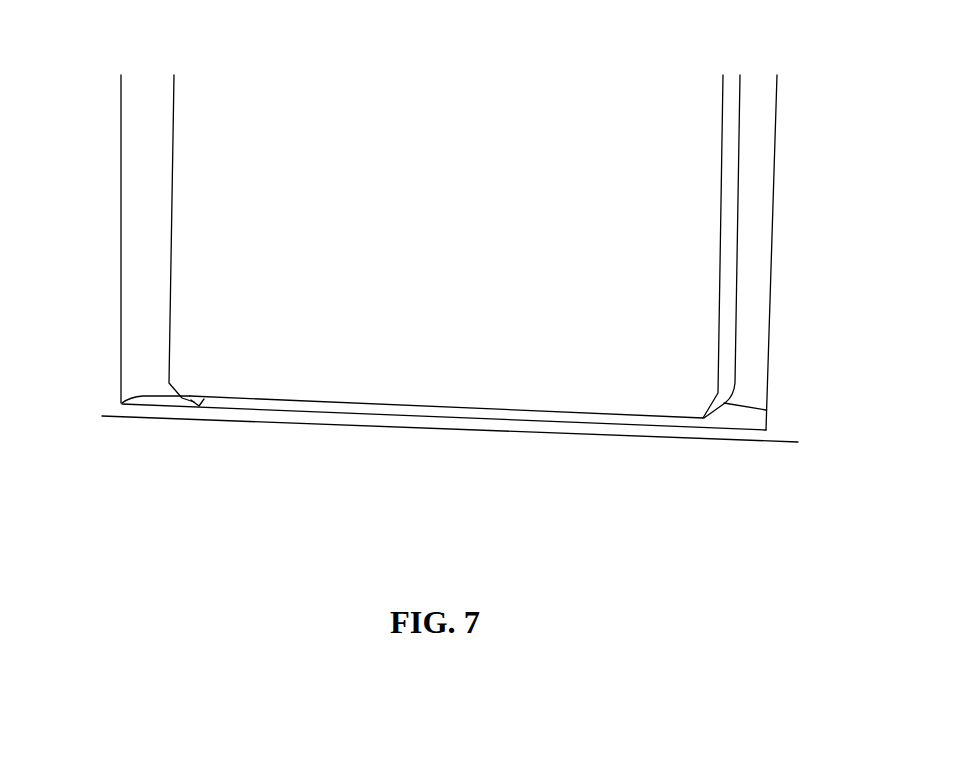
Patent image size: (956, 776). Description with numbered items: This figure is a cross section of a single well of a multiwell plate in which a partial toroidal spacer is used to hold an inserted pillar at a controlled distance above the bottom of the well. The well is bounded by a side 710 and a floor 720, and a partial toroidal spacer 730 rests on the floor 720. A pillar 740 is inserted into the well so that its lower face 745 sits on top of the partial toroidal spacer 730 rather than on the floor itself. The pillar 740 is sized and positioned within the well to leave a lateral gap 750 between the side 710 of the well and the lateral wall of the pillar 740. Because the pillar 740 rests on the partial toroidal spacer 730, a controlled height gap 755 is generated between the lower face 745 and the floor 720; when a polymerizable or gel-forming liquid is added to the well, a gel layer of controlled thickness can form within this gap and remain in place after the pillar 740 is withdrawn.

The side 710 is at (120, 338).
The floor 720 is at (233, 420).
The partial toroidal spacer 730 is at (700, 430).
The pillar 740 is at (167, 182).
The lower face 745 is at (640, 413).
The lateral gap 750 is at (147, 263).
The controlled height gap 755 is at (450, 412).